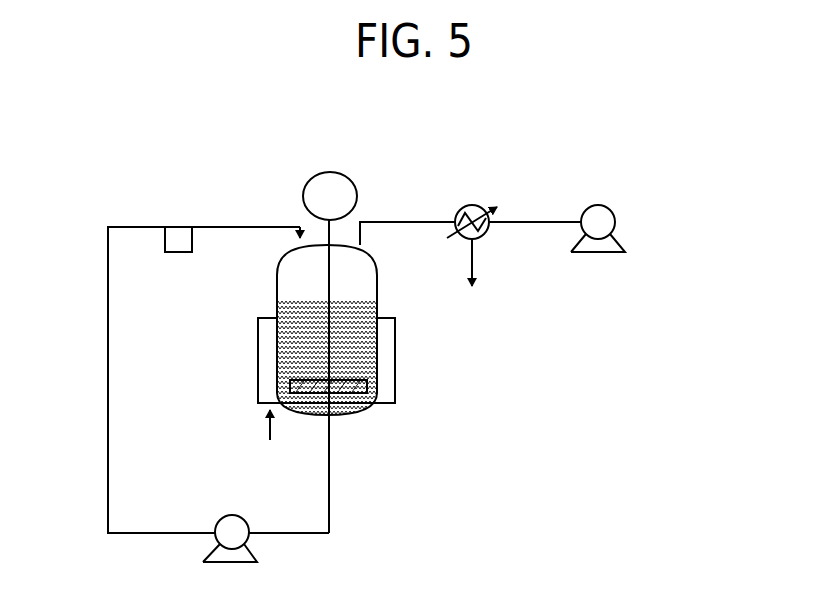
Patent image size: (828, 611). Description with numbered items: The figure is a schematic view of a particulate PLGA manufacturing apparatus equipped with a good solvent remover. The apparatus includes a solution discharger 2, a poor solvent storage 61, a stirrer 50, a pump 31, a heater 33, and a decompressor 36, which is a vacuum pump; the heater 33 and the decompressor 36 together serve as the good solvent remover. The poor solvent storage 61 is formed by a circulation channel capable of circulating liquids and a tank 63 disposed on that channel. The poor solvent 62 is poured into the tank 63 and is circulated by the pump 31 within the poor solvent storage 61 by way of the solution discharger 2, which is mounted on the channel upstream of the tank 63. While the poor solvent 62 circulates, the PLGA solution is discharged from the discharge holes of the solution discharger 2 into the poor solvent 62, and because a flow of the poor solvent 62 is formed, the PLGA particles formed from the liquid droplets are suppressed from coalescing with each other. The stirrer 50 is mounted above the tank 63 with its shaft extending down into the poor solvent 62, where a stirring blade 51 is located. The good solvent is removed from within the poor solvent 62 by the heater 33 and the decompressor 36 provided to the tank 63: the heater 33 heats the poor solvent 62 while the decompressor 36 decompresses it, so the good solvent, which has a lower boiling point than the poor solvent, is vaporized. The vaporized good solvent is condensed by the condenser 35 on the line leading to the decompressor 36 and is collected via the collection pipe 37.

The solution discharger 2 is at (194, 248).
The pump 31 is at (226, 515).
The heater 33 is at (326, 390).
The condenser 35 is at (480, 205).
The decompressor (vacuum pump) 36 is at (605, 204).
The collection pipe 37 is at (469, 278).
The stirrer 50 is at (345, 176).
The stirring blade 51 is at (367, 381).
The poor solvent storage 61 is at (106, 392).
The poor solvent 62 is at (352, 407).
The tank 63 is at (378, 278).